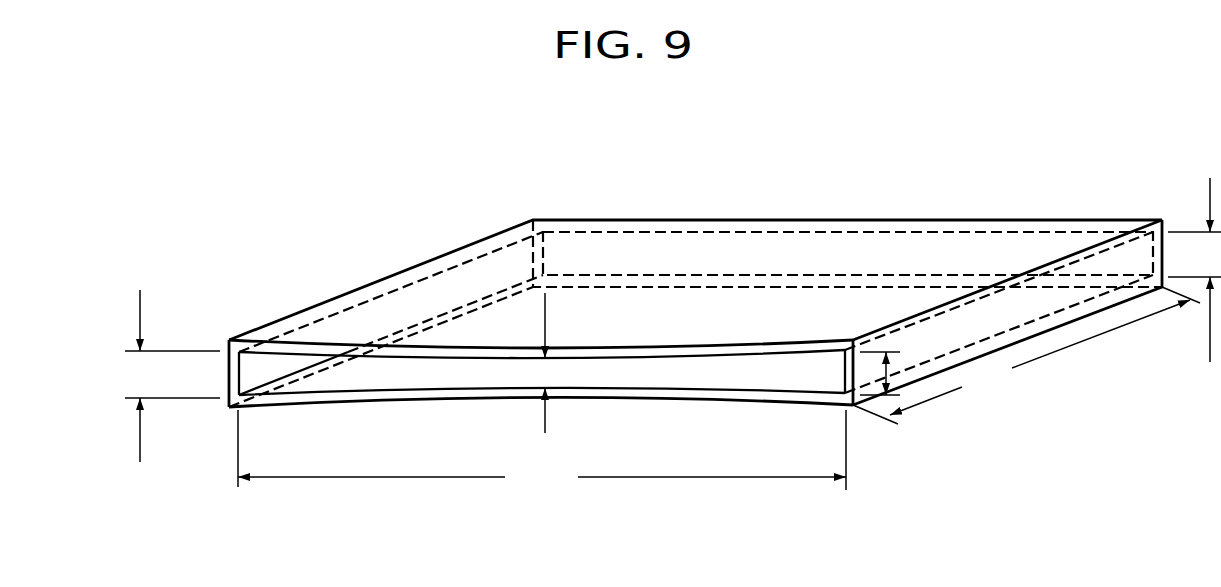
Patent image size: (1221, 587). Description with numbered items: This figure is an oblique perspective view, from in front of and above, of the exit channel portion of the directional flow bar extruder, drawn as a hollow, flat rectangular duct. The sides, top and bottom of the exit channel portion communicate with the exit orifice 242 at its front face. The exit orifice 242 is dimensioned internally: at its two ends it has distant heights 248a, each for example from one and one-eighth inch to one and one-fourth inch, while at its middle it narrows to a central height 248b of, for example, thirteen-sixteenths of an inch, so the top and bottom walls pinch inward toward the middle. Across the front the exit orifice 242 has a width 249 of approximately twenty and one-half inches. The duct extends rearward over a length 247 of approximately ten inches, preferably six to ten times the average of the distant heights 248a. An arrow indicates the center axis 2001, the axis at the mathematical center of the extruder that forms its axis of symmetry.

The center axis 2001 is at (562, 346).
The distant heights 248a is at (140, 462).
The central height 248b is at (545, 433).
The width 249 is at (542, 450).
The length 247 is at (1026, 355).
The exit orifice 242 is at (1210, 362).